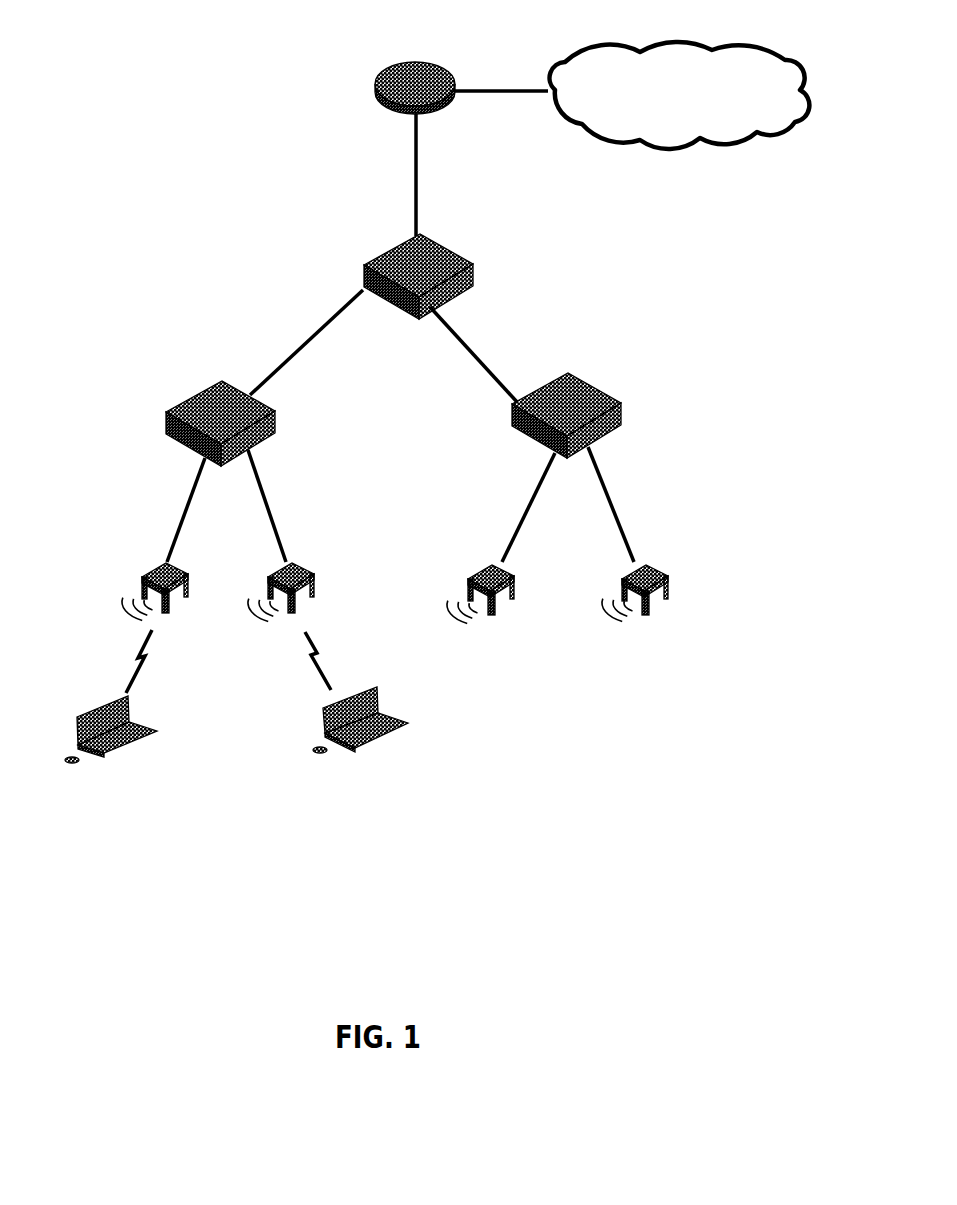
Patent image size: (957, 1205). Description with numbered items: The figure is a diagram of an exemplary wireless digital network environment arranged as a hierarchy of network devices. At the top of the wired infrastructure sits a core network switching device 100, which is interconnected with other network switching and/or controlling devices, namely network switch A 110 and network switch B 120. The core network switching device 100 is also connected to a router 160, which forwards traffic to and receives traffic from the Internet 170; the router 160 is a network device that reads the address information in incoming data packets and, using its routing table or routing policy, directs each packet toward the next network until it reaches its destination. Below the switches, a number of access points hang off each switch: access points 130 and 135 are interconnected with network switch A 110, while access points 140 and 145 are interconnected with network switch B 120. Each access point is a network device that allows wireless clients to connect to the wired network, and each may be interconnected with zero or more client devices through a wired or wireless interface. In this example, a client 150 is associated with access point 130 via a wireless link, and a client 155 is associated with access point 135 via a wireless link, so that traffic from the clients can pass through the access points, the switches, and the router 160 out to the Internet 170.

The core network switching device 100 is at (321, 246).
The network switch A 110 is at (198, 365).
The network switch B 120 is at (629, 395).
The access point 130 is at (70, 608).
The access point 135 is at (328, 611).
The access point 140 is at (433, 586).
The access point 145 is at (676, 588).
The client 150 is at (93, 818).
The client 155 is at (313, 808).
The router 160 is at (315, 108).
The Internet 170 is at (657, 113).